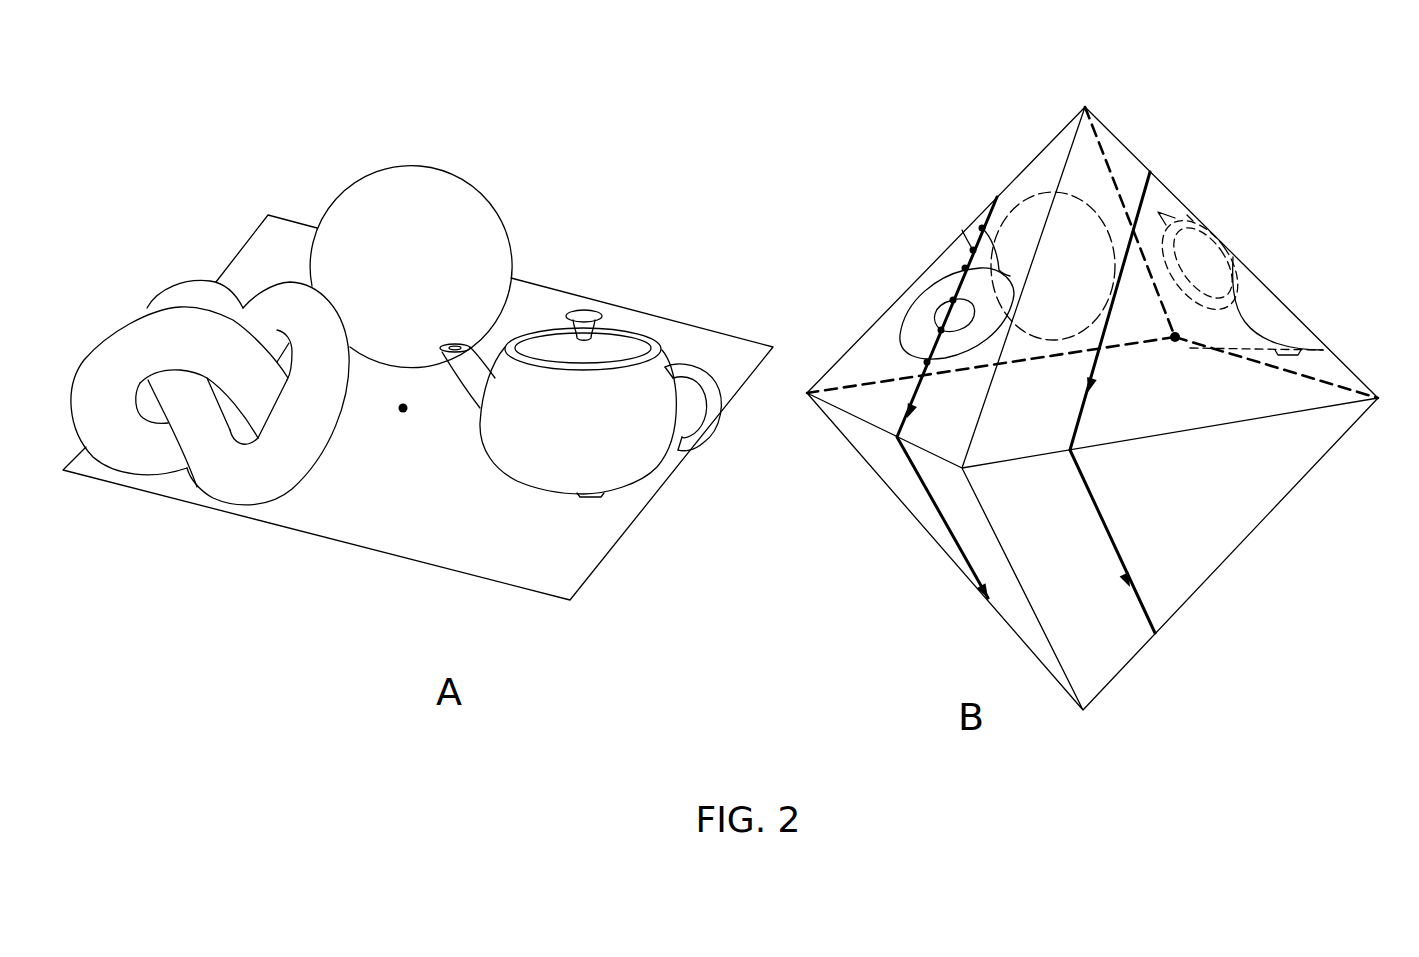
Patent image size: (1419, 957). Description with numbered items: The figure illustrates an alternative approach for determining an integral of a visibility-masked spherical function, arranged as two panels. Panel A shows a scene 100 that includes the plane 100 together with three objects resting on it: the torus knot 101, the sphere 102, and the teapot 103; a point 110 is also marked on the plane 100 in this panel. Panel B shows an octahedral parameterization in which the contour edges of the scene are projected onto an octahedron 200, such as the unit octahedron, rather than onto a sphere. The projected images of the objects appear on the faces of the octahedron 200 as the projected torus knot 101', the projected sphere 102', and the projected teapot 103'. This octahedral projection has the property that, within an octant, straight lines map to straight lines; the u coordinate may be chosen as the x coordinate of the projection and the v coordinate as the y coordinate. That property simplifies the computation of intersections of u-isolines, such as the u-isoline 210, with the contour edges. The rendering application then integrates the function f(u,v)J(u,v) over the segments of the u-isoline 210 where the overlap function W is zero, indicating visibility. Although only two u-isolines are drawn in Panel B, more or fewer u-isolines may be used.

The scene 100 is at (723, 350).
The torus knot 101 is at (210, 360).
The sphere 102 is at (411, 231).
The teapot 103 is at (580, 377).
The reference point on plane 110 is at (403, 413).
The octahedron (octahedral environment map) 200 is at (1127, 148).
The u-isoline 210 is at (900, 422).
The projected image of knot on octahedron 101' is at (957, 228).
The projected image of sphere on octahedron 102' is at (1053, 187).
The projected image of teapot on octahedron 103' is at (1242, 257).